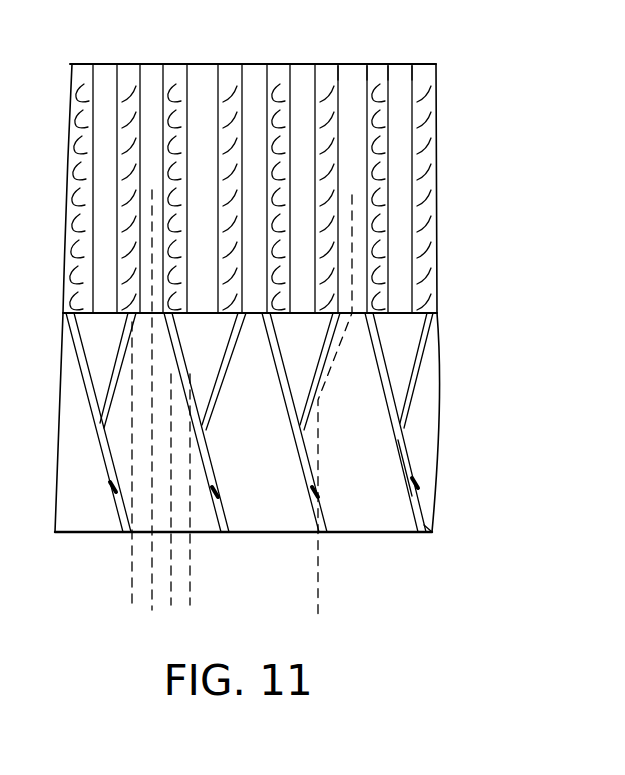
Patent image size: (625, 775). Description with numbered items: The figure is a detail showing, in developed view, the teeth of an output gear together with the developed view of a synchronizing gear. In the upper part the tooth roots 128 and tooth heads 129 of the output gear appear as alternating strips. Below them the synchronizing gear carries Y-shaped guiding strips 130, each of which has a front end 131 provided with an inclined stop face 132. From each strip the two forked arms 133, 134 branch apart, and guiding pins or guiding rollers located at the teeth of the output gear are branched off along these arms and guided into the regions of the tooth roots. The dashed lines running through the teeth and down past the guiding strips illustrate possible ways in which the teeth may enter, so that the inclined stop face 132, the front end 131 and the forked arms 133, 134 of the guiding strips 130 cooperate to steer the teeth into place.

The tooth roots 128 is at (350, 75).
The tooth heads 129 is at (397, 72).
The Y-shaped guiding strips 130 is at (420, 466).
The front end 131 is at (408, 437).
The inclined stop face 132 is at (430, 507).
The forked arm 133 is at (383, 353).
The forked arm 134 is at (403, 392).